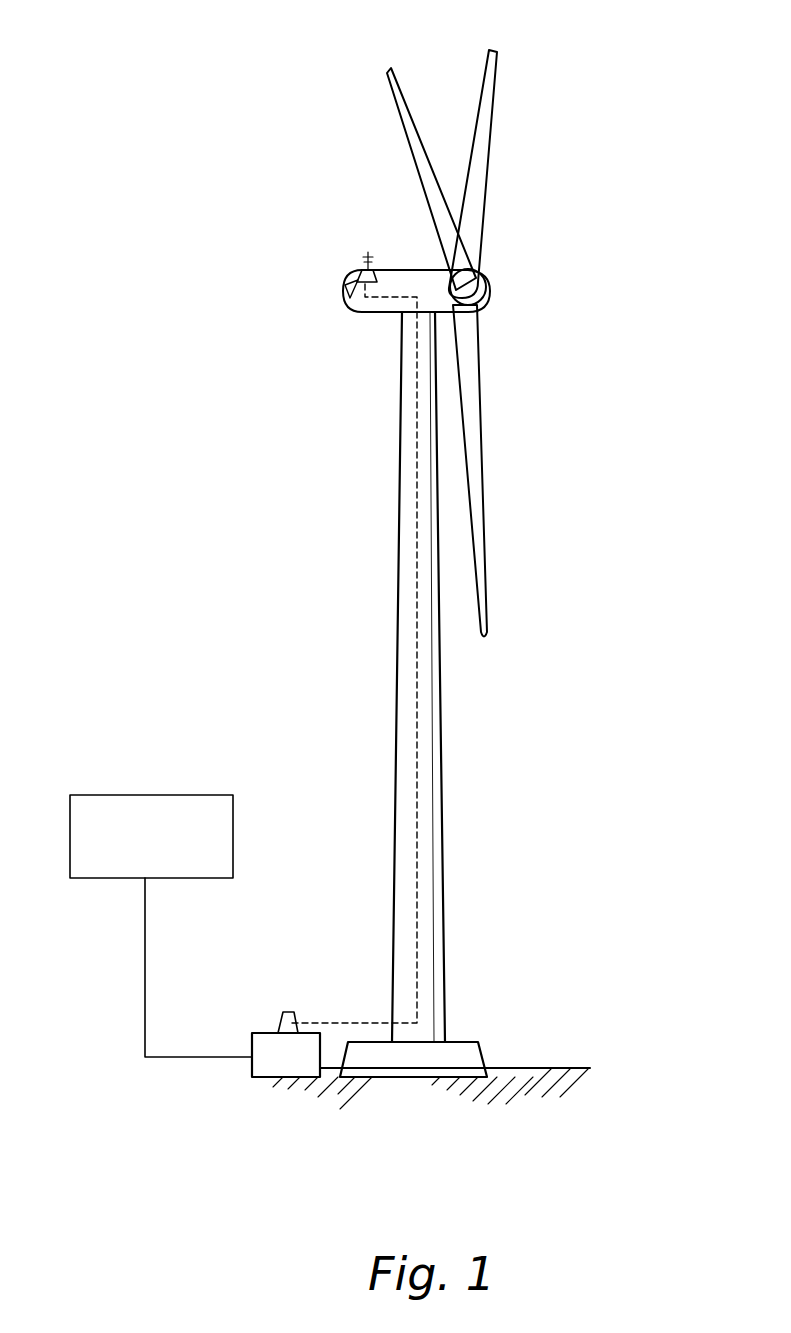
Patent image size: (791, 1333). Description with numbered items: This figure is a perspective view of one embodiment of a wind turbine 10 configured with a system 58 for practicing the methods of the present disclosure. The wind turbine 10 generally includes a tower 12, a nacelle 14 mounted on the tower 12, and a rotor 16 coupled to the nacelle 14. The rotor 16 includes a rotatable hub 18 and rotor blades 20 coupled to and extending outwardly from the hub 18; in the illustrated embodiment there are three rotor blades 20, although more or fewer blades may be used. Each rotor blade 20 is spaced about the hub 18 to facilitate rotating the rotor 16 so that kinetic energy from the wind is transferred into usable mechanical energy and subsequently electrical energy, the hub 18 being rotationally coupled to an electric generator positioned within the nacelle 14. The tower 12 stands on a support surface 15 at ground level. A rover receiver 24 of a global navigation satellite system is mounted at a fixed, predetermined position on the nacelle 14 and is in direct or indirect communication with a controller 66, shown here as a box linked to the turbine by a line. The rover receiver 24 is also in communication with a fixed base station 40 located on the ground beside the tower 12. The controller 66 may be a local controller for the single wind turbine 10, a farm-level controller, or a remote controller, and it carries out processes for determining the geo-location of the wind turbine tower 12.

The wind turbine 10 is at (583, 122).
The tower 12 is at (405, 797).
The nacelle 14 is at (378, 320).
The support surface / foundation 15 is at (480, 1060).
The rotor 16 is at (496, 262).
The rotatable hub 18 is at (486, 298).
The rotor blade 20 is at (483, 92).
The rover receiver 24 is at (358, 275).
The fixed base station 40 is at (252, 1048).
The system 58 is at (241, 680).
The controller 66 is at (233, 833).